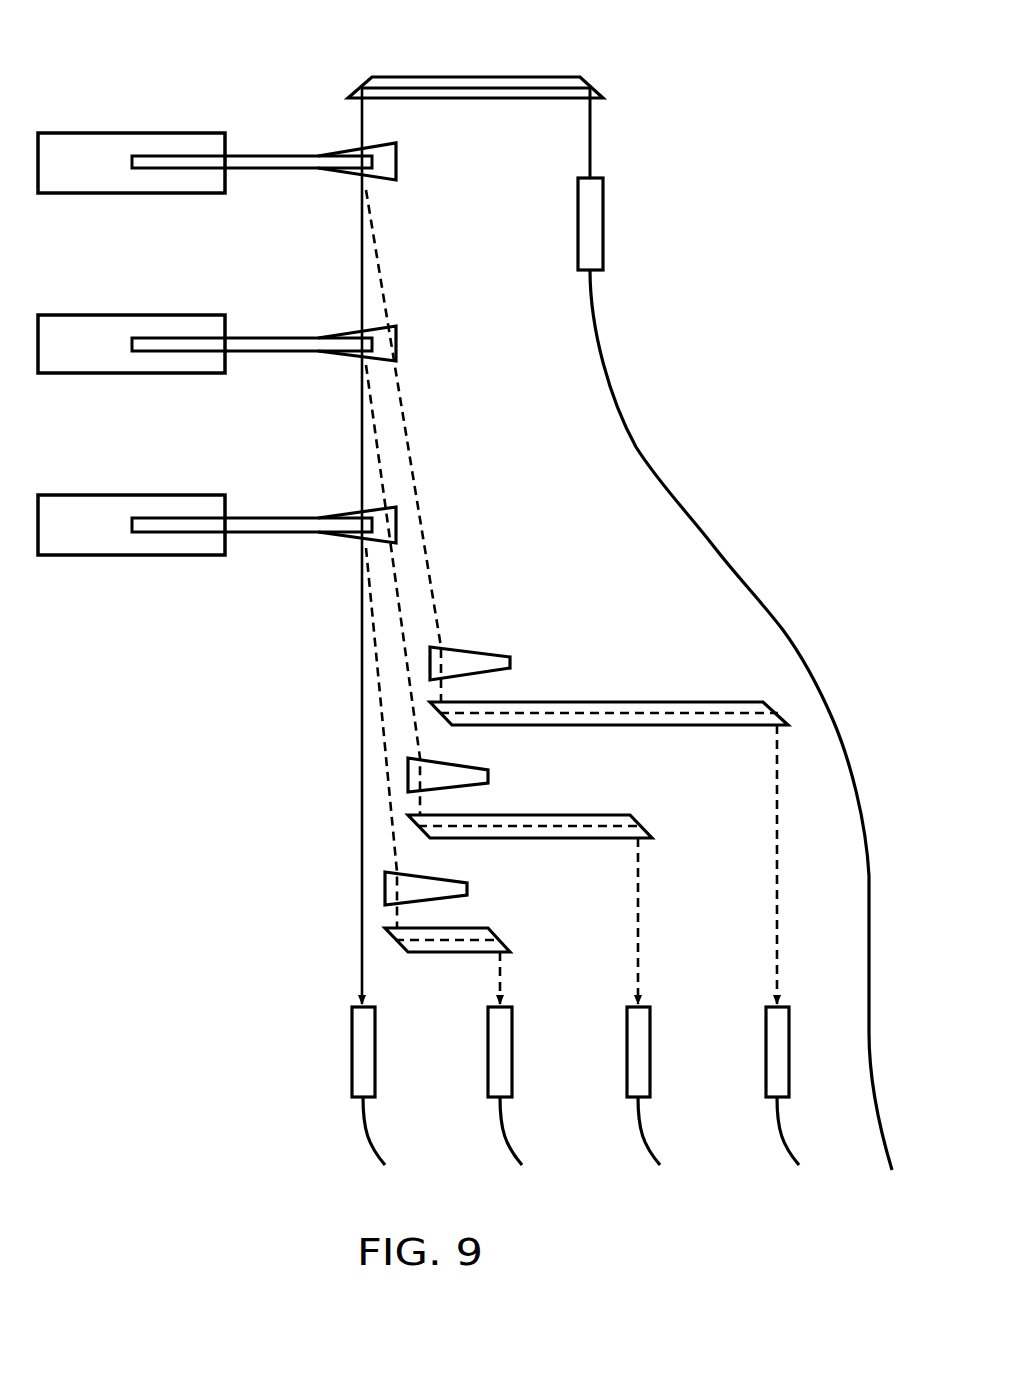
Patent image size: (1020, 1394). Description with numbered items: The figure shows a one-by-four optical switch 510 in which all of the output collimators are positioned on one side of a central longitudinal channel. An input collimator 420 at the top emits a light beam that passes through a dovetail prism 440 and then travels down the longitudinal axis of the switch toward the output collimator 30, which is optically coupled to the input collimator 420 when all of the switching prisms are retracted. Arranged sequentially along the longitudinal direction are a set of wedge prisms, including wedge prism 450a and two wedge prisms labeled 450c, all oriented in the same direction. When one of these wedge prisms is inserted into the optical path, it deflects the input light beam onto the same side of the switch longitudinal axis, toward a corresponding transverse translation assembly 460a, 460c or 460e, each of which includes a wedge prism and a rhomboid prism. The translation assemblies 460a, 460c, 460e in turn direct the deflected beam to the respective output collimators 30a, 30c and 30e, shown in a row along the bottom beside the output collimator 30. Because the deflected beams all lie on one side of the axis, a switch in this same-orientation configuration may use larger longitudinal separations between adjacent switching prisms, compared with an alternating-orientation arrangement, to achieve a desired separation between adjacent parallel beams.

The dovetail prism 440 is at (475, 76).
The 1×4 optical switch 510 is at (800, 170).
The input collimator 420 is at (604, 226).
The wedge prism 450c is at (306, 131).
The wedge prism 450a is at (291, 511).
The transverse translation assembly 460e is at (512, 690).
The transverse translation assembly 460c is at (490, 804).
The transverse translation assembly 460a is at (470, 915).
The output collimator 30 is at (352, 1052).
The output collimator 30a is at (488, 1052).
The output collimator 30c is at (627, 1052).
The output collimator 30e is at (766, 1052).